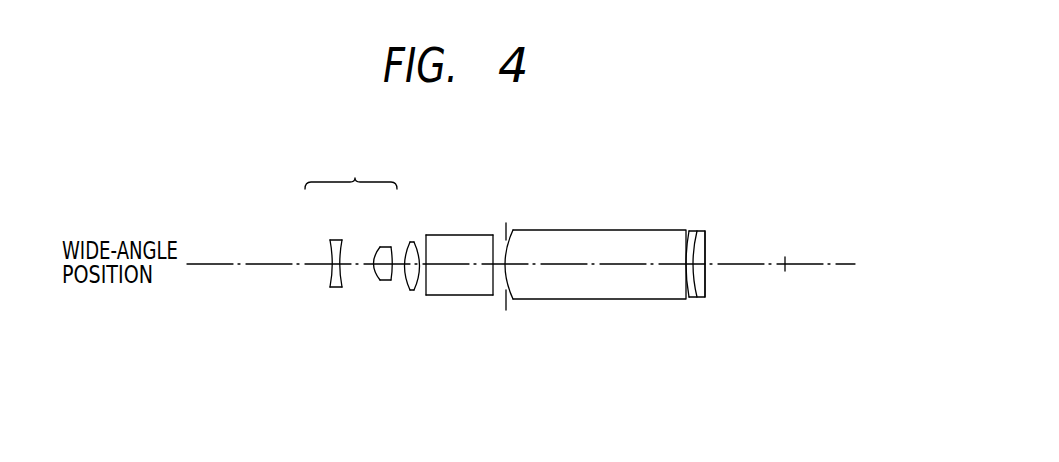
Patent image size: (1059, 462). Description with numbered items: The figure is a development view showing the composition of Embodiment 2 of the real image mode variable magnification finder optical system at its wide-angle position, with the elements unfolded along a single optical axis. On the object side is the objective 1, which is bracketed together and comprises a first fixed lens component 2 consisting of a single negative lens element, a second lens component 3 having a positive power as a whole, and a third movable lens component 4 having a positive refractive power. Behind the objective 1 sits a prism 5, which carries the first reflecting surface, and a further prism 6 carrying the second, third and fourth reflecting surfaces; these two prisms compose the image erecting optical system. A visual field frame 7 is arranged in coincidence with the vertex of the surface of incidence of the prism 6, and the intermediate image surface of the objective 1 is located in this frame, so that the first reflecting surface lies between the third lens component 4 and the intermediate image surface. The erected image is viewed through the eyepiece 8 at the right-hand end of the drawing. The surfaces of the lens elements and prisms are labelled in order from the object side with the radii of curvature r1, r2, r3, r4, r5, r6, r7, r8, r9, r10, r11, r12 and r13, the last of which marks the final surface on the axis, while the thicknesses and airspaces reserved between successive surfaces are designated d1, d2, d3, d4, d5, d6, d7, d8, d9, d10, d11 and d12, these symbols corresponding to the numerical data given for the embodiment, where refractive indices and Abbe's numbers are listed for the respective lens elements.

The objective 1 is at (355, 178).
The first fixed lens component 2 is at (337, 288).
The second lens component 3 is at (387, 281).
The third movable lens component 4 is at (412, 291).
The prism 5 is at (467, 236).
The prism 6 is at (608, 230).
The visual field frame 7 is at (507, 305).
The eyepiece 8 is at (699, 300).
The radius of curvature r1 is at (330, 241).
The radius of curvature r2 is at (342, 240).
The radius of curvature r3 is at (378, 247).
The radius of curvature r4 is at (392, 247).
The radius of curvature r5 is at (410, 242).
The radius of curvature r6 is at (415, 242).
The radius of curvature r7 is at (427, 236).
The radius of curvature r8 is at (493, 236).
The radius of curvature r9 is at (513, 231).
The radius of curvature r10 is at (690, 236).
The radius of curvature r11 is at (700, 233).
The radius of curvature r12 is at (707, 236).
The radius of curvature r13 is at (787, 262).
The airspace d1 is at (334, 267).
The airspace d2 is at (360, 267).
The airspace d3 is at (383, 281).
The airspace d4 is at (397, 267).
The airspace d5 is at (416, 270).
The airspace d6 is at (436, 267).
The airspace d7 is at (470, 267).
The airspace d8 is at (503, 270).
The airspace d9 is at (615, 267).
The airspace d10 is at (688, 267).
The airspace d11 is at (701, 268).
The airspace d12 is at (765, 267).